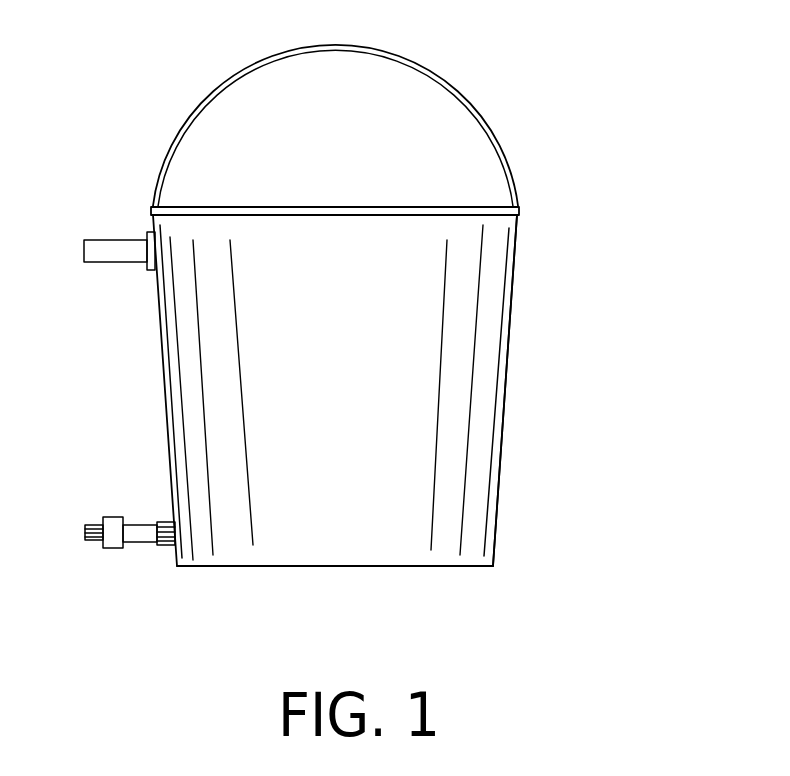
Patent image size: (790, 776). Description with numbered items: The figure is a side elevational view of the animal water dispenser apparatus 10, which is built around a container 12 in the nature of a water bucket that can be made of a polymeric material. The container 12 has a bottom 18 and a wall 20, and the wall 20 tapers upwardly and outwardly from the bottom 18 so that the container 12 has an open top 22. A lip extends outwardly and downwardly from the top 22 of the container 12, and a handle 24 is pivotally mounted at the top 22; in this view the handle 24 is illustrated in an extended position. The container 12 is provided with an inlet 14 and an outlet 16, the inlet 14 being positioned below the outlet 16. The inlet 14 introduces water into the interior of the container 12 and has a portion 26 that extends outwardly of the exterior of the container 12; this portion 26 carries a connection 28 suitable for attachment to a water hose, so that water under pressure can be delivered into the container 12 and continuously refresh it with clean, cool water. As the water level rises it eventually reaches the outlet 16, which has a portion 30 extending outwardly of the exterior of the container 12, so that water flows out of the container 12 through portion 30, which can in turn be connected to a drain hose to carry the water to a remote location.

The animal water dispenser apparatus 10 is at (351, 341).
The container 12 is at (494, 445).
The inlet 14 is at (158, 522).
The outlet 16 is at (151, 272).
The bottom 18 is at (440, 566).
The wall 20 is at (506, 377).
The open top 22 is at (355, 207).
The handle 24 is at (487, 117).
The portion of inlet 26 is at (138, 548).
The connection 28 is at (88, 523).
The portion of outlet 30 is at (104, 243).